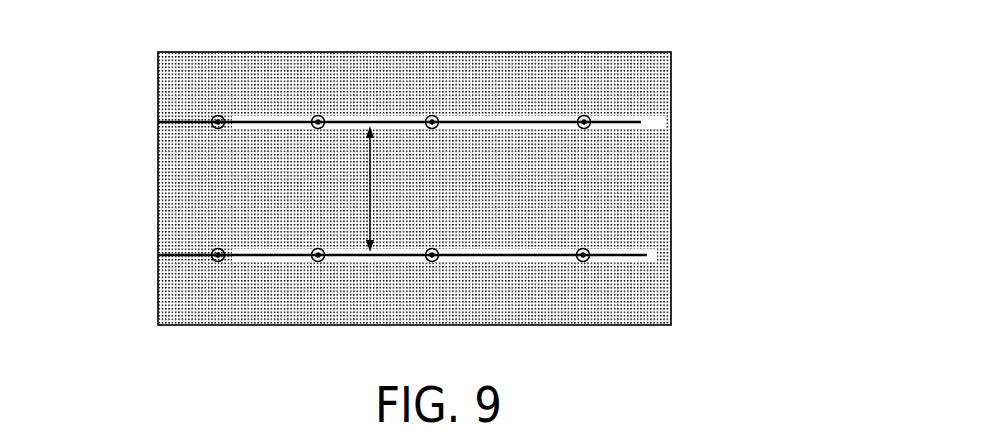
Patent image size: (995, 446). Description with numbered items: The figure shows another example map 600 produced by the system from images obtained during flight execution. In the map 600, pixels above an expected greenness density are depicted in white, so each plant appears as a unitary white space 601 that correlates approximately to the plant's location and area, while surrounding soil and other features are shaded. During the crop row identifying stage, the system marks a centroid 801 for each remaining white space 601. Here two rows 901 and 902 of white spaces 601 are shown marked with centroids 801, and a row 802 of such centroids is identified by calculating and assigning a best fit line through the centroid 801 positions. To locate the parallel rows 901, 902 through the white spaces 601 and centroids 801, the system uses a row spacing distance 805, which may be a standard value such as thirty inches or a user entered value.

The map 600 is at (108, 70).
The white spaces 601 is at (522, 98).
The centroids 801 is at (312, 126).
The row 802 is at (642, 78).
The row spacing distance 805 is at (370, 188).
The first row 901 is at (644, 122).
The second row 902 is at (646, 257).